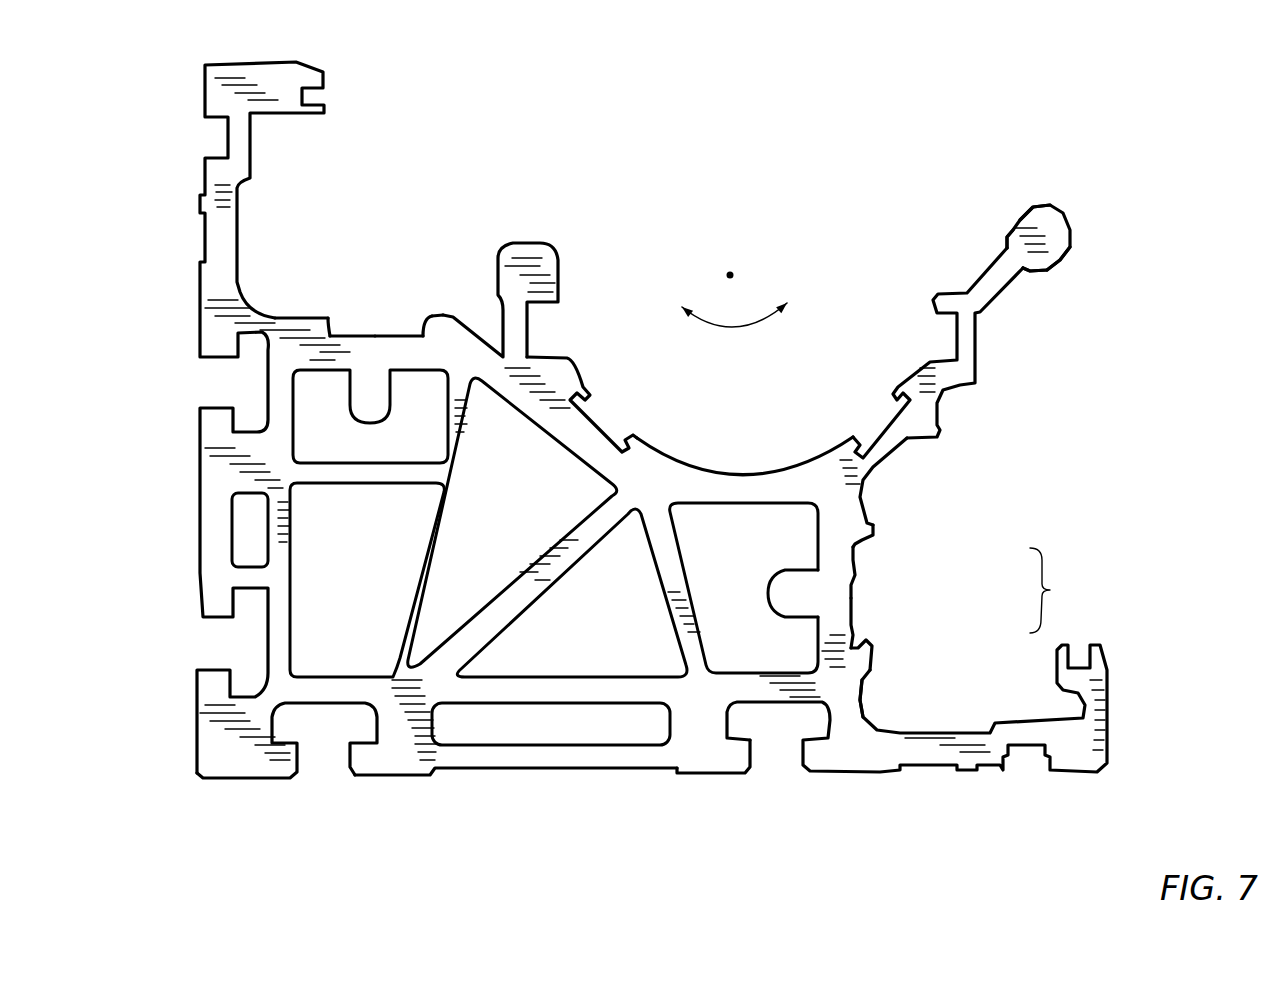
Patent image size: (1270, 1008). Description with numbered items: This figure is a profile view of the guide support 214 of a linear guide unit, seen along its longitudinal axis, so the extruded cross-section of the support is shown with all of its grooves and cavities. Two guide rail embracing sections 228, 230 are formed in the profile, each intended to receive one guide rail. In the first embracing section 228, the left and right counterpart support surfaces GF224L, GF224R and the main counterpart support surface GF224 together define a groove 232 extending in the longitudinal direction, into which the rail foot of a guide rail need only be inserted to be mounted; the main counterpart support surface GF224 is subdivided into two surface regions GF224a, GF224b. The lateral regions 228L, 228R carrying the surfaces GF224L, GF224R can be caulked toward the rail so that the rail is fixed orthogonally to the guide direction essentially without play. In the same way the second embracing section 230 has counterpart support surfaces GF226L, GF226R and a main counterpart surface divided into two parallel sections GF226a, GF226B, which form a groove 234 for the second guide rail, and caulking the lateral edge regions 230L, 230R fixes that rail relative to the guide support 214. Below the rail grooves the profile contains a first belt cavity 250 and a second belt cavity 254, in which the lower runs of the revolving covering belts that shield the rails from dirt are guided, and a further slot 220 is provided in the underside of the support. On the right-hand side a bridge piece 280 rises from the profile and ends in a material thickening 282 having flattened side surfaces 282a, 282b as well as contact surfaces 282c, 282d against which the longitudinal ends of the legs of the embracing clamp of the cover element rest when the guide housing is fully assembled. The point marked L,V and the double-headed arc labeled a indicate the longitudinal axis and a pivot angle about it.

The guide rail embracing section 228 is at (291, 345).
The left edge region of guide rail embracing section 228L is at (293, 320).
The right edge region of guide rail embracing section 228R is at (423, 318).
The groove 232 is at (390, 255).
The main counterpart support surface GF224 is at (384, 225).
The first surface region of main counterpart support surface GF224a is at (340, 333).
The second surface region of main counterpart support surface GF224b is at (404, 333).
The left counterpart support surface GF224L is at (330, 326).
The right counterpart support surface GF224R is at (424, 322).
The first belt cavity 250 is at (390, 455).
The second belt cavity 254 is at (748, 548).
The groove 234 is at (850, 594).
The T-slot 220 is at (313, 728).
The guide support 214 is at (677, 750).
The guide rail embracing section 230 is at (827, 685).
The left lateral edge region of guide rail embracing section 230L is at (862, 533).
The right lateral edge region of guide rail embracing section 230R is at (847, 665).
The left counterpart support surface GF226L is at (883, 542).
The first counterpart surface section GF226a is at (860, 568).
The second counterpart surface section GF226B is at (862, 622).
The right counterpart support surface GF226R is at (860, 644).
The bridge piece 280 is at (977, 315).
The material thickening 282 is at (1053, 235).
The flattened side surface 282a is at (1007, 233).
The flattened side surface 282b is at (1057, 260).
The contact surface 282c is at (1007, 243).
The contact surface 282d is at (1020, 270).
The pivot axis L,V is at (730, 275).
The rotation angle a is at (737, 330).